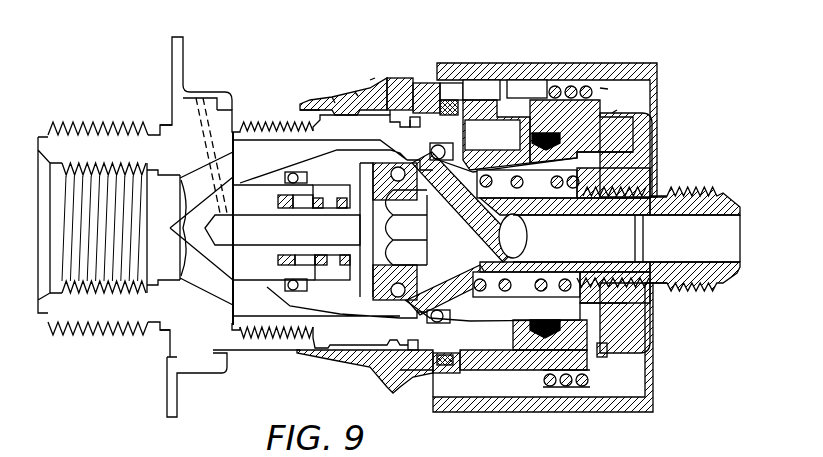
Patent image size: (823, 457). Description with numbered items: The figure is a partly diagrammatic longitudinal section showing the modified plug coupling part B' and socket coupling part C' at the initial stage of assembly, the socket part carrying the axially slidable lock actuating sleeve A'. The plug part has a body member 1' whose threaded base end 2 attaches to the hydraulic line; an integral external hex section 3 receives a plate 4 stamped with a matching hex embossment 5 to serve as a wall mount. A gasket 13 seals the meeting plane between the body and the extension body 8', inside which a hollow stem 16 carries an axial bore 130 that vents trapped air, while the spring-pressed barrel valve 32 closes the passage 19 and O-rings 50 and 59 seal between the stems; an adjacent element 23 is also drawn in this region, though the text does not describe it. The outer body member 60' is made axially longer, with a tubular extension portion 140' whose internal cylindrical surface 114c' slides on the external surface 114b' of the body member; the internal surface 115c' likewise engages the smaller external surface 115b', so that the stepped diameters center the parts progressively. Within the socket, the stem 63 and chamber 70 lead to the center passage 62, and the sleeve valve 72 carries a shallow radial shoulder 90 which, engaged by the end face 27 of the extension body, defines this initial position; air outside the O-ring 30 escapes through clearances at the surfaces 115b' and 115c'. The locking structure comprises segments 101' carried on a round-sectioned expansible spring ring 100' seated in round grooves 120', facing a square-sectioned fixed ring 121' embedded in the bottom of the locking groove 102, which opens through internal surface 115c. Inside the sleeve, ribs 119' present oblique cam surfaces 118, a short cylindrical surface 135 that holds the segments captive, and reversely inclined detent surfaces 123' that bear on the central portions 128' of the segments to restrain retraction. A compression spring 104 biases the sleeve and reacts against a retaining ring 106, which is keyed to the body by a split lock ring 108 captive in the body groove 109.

The base end 2 is at (48, 133).
The body member 1' is at (189, 223).
The hex section 3 is at (172, 108).
The plate 4 is at (172, 60).
The hex embossment 5 is at (204, 87).
The gasket 13 is at (238, 127).
The extension body 8' is at (345, 124).
The stem 16 is at (233, 206).
The axial bore 130 is at (237, 237).
The passage 19 is at (241, 310).
The barrel valve 32 is at (340, 302).
The O-ring 50 is at (285, 175).
The stem 23 is at (362, 164).
The O-ring 59 is at (401, 231).
The external surface 114b' is at (357, 218).
The tubular extension portion 140' is at (347, 57).
The external cylindrical surface 115b' is at (366, 70).
The internal cylindrical surface 114c' is at (385, 47).
The locking groove 102 is at (383, 78).
The central portions of the segments 128' is at (427, 67).
The fixed ring 121' is at (407, 93).
The cylindrical surface 135 is at (447, 100).
The segments 101' is at (461, 59).
The compression spring 104 is at (572, 64).
The spring ring 100' is at (482, 63).
The cam surfaces 118 is at (498, 82).
The ribs 119' is at (548, 197).
The inclined detent surfaces 123' is at (571, 62).
The body member 60' is at (581, 131).
The internal cylindrical surface 115c' is at (497, 135).
The grooves 120' is at (492, 135).
The retaining ring 106 is at (608, 89).
The lock ring 108 is at (617, 110).
The O-ring 30 is at (428, 147).
The sleeve valve 72 is at (452, 175).
The chamber 70 is at (498, 190).
The stem 63 is at (566, 222).
The center passage 62 is at (684, 243).
The radial shoulder 90 is at (457, 313).
The end face 27 is at (463, 332).
The internal cylindrical surface 115c is at (523, 345).
The groove 109 is at (605, 365).
The lock actuating sleeve A' is at (620, 422).
The plug coupling part B' is at (136, 356).
The socket coupling part C' is at (687, 351).